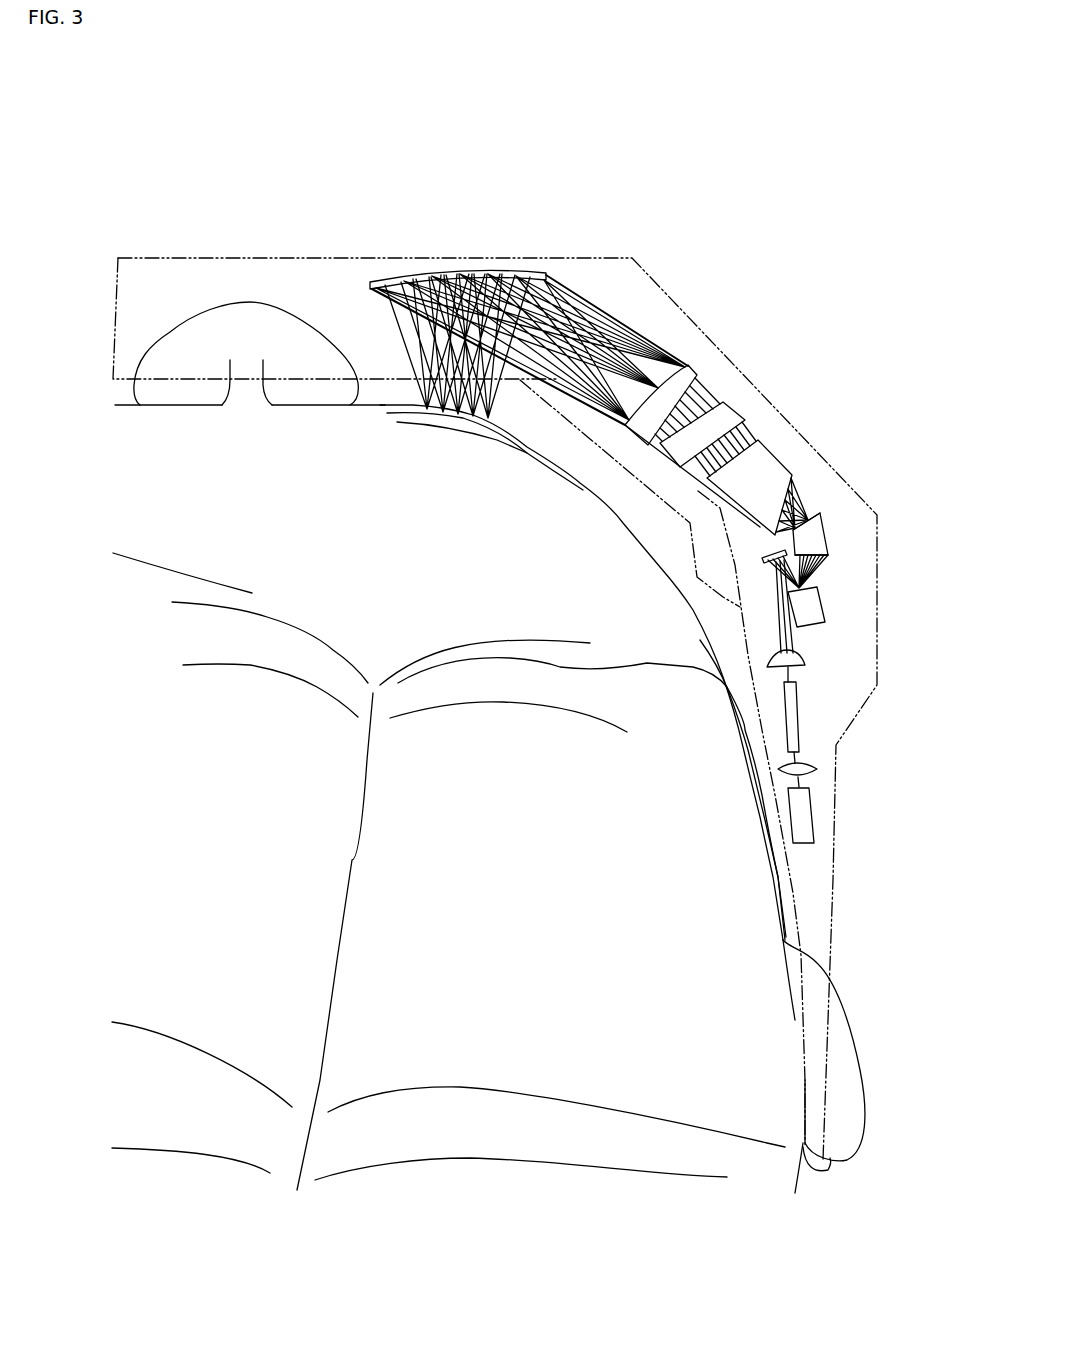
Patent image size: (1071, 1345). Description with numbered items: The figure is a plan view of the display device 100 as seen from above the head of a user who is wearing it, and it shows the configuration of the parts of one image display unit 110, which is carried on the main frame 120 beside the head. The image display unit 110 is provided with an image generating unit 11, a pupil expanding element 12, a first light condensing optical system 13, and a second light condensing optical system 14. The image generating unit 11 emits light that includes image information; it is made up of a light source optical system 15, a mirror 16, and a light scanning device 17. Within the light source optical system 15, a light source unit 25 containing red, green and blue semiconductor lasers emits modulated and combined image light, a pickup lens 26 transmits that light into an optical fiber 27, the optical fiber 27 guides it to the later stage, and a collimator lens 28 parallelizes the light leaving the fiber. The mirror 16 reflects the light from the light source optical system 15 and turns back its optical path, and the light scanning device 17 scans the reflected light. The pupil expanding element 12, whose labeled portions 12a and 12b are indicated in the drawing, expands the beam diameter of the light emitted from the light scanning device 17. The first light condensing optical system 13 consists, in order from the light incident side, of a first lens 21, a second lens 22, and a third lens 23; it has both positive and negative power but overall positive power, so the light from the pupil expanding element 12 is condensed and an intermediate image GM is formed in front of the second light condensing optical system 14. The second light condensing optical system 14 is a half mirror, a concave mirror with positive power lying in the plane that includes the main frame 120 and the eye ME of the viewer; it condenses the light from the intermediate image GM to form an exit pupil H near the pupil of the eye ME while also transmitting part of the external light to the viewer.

The display device 100 is at (495, 639).
The image display unit 110 is at (495, 639).
The main frame 120 is at (232, 258).
The second light condensing optical system 14 is at (457, 270).
The first light condensing optical system 13 is at (720, 376).
The third lens 23 is at (692, 366).
The second lens 22 is at (731, 408).
The first lens 21 is at (758, 440).
The pupil expanding element 12 is at (870, 522).
The display surface of image display element 12a is at (828, 562).
The back surface of image display element 12b is at (805, 515).
The mirror 16 is at (760, 549).
The light scanning device 17 is at (815, 613).
The collimator lens 28 is at (775, 657).
The optical fiber 27 is at (798, 732).
The pickup lens 26 is at (808, 772).
The light source unit 25 is at (807, 820).
The image generating unit 11 is at (725, 721).
The light source optical system 15 is at (745, 800).
The intermediate image GM is at (584, 298).
The eye ME is at (463, 417).
The exit pupil H is at (542, 1128).